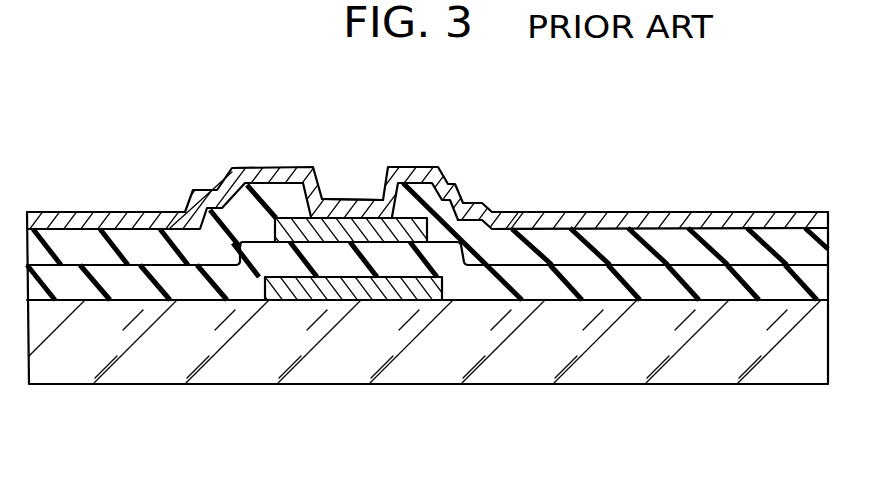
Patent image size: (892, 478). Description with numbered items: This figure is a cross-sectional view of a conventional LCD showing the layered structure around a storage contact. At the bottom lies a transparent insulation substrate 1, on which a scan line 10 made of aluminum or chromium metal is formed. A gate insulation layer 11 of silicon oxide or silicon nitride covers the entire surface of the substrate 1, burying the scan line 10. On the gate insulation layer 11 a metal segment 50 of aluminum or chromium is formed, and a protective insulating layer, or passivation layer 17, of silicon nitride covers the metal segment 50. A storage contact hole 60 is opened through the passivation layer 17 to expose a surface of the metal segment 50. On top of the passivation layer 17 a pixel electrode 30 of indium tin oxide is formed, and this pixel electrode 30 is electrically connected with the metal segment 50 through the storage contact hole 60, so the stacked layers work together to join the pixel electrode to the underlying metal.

The transparent insulation substrate 1 is at (653, 368).
The scan line 10 is at (341, 293).
The gate insulation layer 11 is at (540, 283).
The protective insulating layer 17 is at (243, 227).
The pixel electrode 30 is at (103, 222).
The metal segment 50 is at (351, 228).
The storage contact hole 60 is at (338, 208).